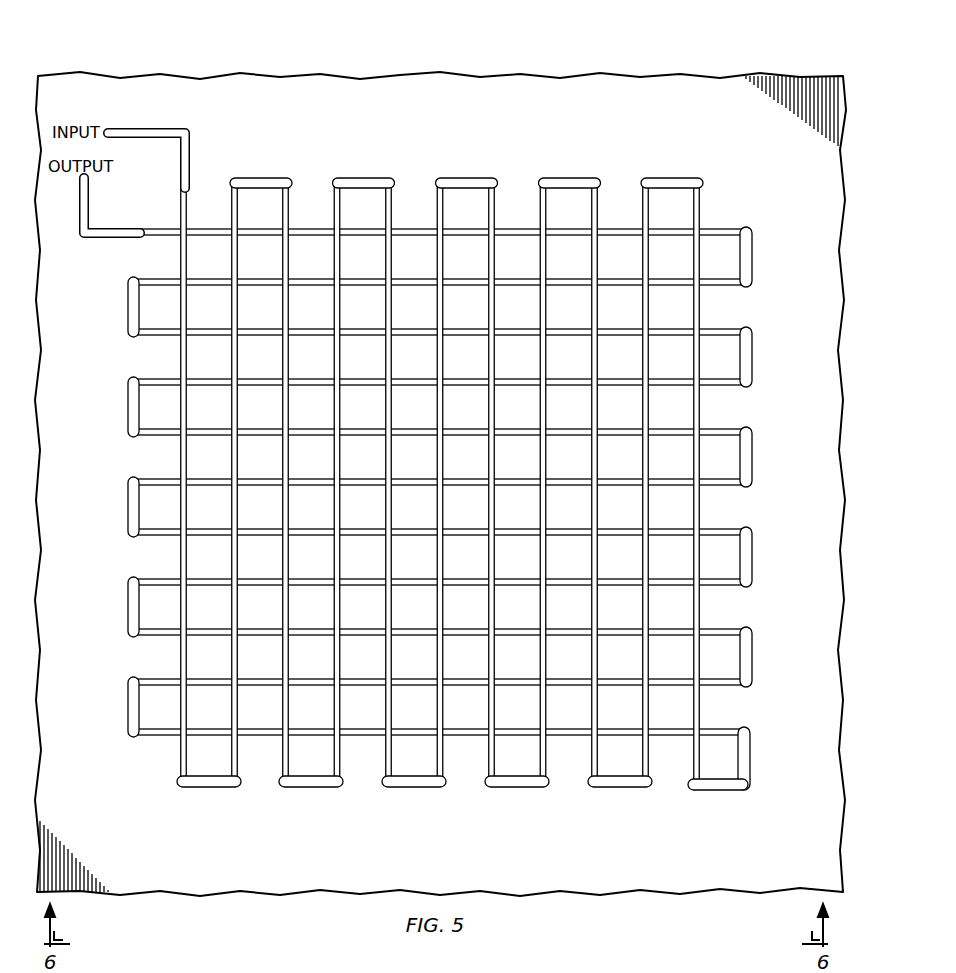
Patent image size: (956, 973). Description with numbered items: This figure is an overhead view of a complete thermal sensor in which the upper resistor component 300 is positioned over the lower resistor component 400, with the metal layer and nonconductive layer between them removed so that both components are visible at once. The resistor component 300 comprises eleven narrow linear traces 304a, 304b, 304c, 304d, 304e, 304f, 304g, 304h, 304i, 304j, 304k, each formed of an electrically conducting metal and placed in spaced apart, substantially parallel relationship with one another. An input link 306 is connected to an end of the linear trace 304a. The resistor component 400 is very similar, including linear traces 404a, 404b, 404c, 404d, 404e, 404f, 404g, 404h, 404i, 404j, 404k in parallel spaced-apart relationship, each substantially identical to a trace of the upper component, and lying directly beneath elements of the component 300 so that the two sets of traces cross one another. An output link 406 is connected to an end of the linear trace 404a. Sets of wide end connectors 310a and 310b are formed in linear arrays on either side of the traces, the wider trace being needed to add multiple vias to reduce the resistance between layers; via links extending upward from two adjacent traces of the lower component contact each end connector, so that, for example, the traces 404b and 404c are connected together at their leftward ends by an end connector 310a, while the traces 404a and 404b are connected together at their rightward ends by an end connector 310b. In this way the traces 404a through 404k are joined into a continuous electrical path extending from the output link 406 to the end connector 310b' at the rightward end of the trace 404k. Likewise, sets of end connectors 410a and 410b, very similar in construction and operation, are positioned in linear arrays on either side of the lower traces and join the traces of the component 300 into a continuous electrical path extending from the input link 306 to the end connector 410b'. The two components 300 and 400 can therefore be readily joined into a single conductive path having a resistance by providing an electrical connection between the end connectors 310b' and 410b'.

The resistor component 300 is at (199, 56).
The input link 306 is at (178, 127).
The output link 406 is at (112, 228).
The resistor component 400 is at (444, 484).
The linear trace 304a is at (177, 762).
The linear trace 304b is at (241, 762).
The linear trace 304c is at (290, 180).
The linear trace 304d is at (343, 762).
The linear trace 304e is at (391, 180).
The linear trace 304f is at (446, 762).
The linear trace 304g is at (494, 180).
The linear trace 304h is at (549, 762).
The linear trace 304i is at (596, 180).
The linear trace 304j is at (651, 762).
The linear trace 304k is at (699, 180).
The linear trace 404a is at (720, 232).
The linear trace 404b is at (138, 280).
The linear trace 404c is at (720, 332).
The linear trace 404d is at (138, 380).
The linear trace 404e is at (720, 432).
The linear trace 404f is at (138, 480).
The linear trace 404g is at (720, 532).
The linear trace 404h is at (138, 580).
The linear trace 404i is at (720, 632).
The linear trace 404j is at (138, 680).
The linear trace 404k is at (720, 732).
The end connector 310a is at (127, 306).
The end connector 310b is at (785, 457).
The end connector 310b' is at (787, 758).
The end connector 410a is at (260, 176).
The end connector 410b is at (414, 807).
The end connector 410b' is at (724, 809).